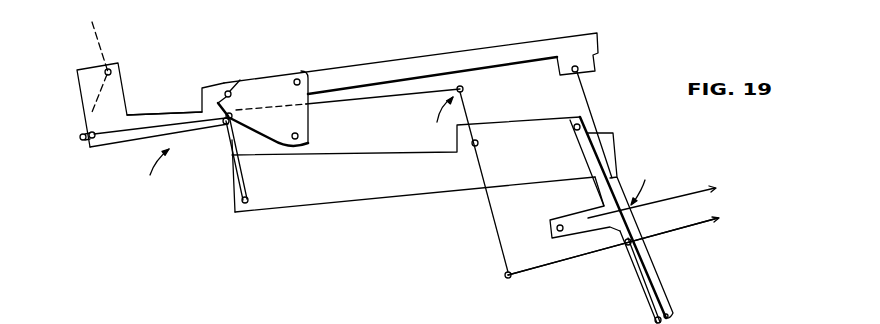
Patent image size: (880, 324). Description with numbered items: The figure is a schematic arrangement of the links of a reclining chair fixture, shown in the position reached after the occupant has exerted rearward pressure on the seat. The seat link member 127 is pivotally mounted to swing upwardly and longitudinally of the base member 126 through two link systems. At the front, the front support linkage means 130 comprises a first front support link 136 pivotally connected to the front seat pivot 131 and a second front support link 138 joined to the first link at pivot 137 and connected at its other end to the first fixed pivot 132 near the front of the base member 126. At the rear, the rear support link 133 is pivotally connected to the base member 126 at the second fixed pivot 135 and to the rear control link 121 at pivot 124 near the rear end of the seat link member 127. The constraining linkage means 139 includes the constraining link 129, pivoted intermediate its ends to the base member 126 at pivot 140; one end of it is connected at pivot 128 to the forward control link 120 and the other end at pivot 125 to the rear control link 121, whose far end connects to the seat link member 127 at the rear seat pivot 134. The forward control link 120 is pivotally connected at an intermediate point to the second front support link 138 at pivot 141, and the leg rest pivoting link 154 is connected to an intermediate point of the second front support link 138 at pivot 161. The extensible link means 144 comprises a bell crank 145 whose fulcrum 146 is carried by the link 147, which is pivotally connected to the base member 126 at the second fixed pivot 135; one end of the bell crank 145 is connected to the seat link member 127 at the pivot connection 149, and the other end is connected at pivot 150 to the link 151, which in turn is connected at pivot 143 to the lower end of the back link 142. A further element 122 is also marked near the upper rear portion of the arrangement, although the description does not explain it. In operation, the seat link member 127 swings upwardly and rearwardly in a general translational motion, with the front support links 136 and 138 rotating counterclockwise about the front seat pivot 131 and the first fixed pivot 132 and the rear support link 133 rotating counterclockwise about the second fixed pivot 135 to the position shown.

The forward control link 120 is at (561, 262).
The rear control link 121 is at (386, 101).
The frame plate 122 is at (111, 69).
The pivot 124 is at (197, 109).
The pivot 125 is at (464, 89).
The base member 126 is at (357, 199).
The seat link member 127 is at (436, 62).
The pivot 128 is at (506, 279).
The constraining link 129 is at (470, 109).
The front support linkage means 130 is at (627, 217).
The front seat pivot 131 is at (578, 68).
The first fixed pivot 132 is at (577, 124).
The rear support link 133 is at (230, 142).
The rear seat pivot 134 is at (93, 131).
The second fixed pivot 135 is at (238, 212).
The first front support link 136 is at (589, 97).
The pivot 137 is at (663, 318).
The second front support link 138 is at (602, 186).
The constraining linkage means 139 is at (433, 114).
The pivot 140 is at (478, 144).
The pivot 141 is at (626, 247).
The back link 142 is at (101, 53).
The pivot 143 is at (80, 139).
The extensible link means 144 is at (146, 166).
The bell crank 145 is at (252, 95).
The fulcrum 146 is at (228, 91).
The link 147 is at (241, 145).
The pivot connection 149 is at (299, 79).
The pivot 150 is at (299, 136).
The link 151 is at (195, 137).
The leg rest pivoting link 154 is at (688, 194).
The pivot 161 is at (557, 231).